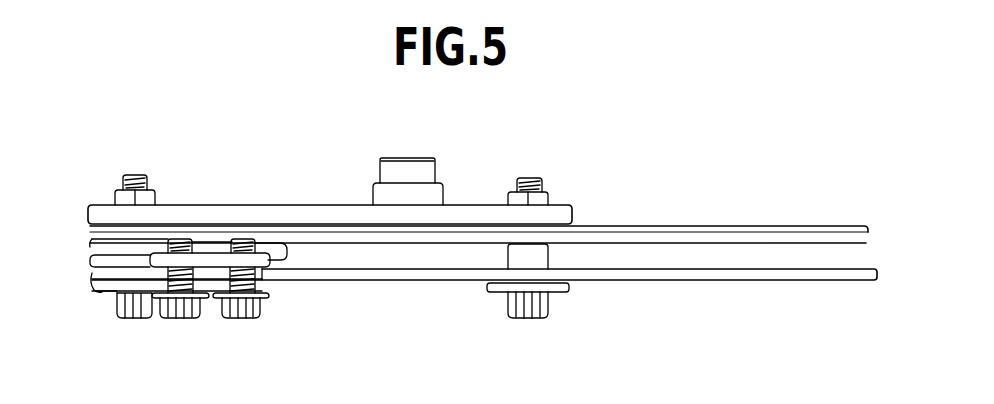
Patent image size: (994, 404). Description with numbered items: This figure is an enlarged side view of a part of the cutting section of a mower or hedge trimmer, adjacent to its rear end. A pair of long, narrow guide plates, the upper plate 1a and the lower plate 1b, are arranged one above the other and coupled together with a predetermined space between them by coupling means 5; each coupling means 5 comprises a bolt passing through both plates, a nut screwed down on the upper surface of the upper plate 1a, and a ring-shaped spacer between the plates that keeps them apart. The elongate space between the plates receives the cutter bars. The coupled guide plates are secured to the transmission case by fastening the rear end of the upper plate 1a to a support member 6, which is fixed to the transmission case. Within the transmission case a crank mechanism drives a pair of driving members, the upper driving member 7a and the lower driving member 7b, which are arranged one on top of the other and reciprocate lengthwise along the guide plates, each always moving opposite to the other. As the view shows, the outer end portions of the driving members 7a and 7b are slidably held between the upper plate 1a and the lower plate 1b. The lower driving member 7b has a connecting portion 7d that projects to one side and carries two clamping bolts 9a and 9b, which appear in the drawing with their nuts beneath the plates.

The upper plate 1a is at (718, 225).
The lower plate 1b is at (730, 281).
The coupling means 5 is at (552, 193).
The support member 6 is at (325, 207).
The upper driving member 7a is at (118, 250).
The lower driving member 7b is at (120, 260).
The connecting portion 7d is at (210, 262).
The clamping bolt 9a is at (262, 310).
The clamping bolt 9b is at (188, 308).